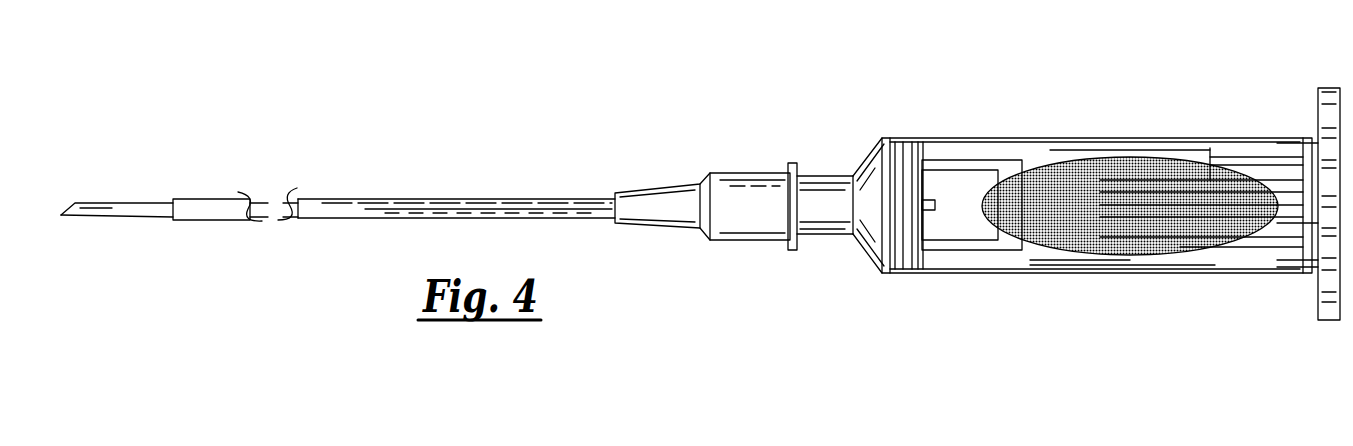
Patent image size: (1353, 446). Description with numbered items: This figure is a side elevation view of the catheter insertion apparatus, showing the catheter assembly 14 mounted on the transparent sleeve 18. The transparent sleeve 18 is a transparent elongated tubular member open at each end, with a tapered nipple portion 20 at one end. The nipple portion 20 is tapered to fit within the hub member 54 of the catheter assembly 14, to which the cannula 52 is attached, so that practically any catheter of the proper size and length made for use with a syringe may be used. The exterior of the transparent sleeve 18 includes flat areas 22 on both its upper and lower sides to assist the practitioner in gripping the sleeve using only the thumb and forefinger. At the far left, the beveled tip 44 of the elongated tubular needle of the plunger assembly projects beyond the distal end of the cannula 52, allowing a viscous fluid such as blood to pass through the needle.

The catheter assembly 14 is at (611, 115).
The transparent sleeve 18 is at (1111, 186).
The nipple portion 20 is at (840, 176).
The flat areas 22 is at (1150, 195).
The beveled tip 44 is at (179, 174).
The cannula 52 is at (456, 166).
The hub member 54 is at (706, 240).